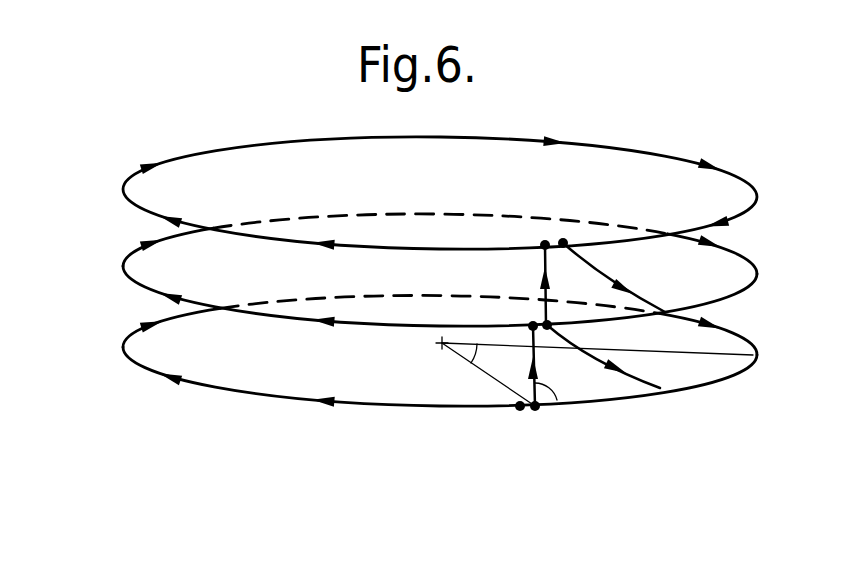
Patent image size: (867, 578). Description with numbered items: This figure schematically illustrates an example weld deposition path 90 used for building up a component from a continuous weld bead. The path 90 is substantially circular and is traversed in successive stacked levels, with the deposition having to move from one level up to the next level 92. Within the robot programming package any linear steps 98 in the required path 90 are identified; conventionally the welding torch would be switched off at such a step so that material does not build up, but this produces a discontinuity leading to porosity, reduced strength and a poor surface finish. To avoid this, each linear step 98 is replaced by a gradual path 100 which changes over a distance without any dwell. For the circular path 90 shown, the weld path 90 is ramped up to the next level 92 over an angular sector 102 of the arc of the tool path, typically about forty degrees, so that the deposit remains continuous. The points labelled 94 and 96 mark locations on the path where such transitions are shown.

The weld deposition path 90 is at (232, 388).
The next level 92 is at (121, 274).
The upper transfer point 94 is at (545, 245).
The lower transfer point 96 is at (535, 413).
The linear step 98 is at (557, 400).
The gradual path 100 is at (662, 305).
The angular sector 102 is at (467, 350).